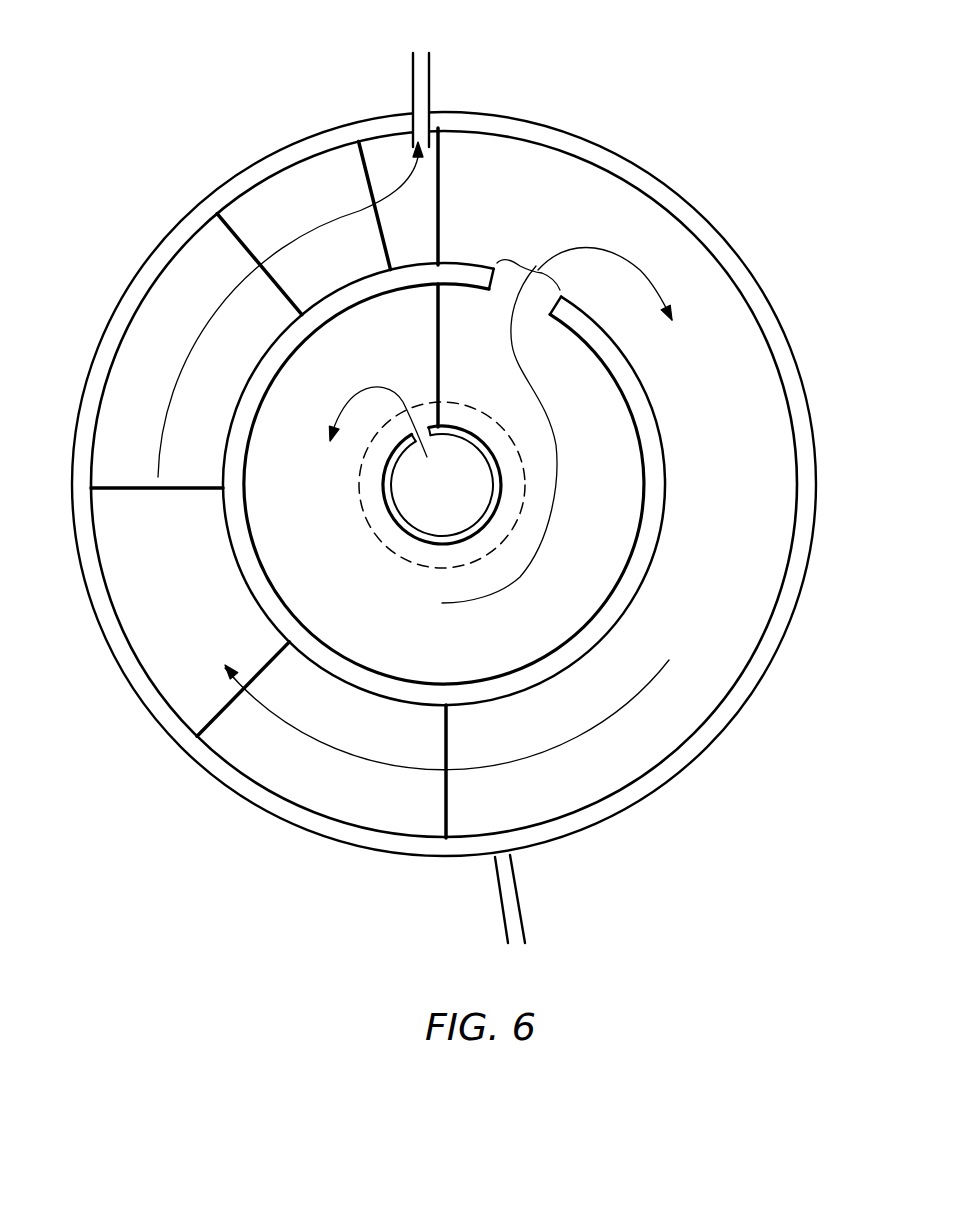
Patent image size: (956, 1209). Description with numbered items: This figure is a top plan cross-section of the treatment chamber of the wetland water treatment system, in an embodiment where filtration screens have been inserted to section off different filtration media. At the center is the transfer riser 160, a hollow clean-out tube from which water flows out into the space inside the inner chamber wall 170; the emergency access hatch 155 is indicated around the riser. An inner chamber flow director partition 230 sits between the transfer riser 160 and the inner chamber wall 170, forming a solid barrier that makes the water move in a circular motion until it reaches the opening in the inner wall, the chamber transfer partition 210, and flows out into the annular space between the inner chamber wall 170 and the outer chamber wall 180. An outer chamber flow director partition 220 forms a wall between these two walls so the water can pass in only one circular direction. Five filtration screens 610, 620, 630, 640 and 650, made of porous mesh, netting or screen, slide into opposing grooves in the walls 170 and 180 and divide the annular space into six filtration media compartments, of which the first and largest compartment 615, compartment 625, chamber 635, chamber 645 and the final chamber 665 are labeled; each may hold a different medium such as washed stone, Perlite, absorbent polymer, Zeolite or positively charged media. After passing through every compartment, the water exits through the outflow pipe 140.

The outflow pipe 140 is at (412, 67).
The outer chamber wall 180 is at (604, 153).
The filtration media compartment 645 is at (163, 300).
The filtration media compartment 625 is at (258, 763).
The filtration screen 630 is at (107, 487).
The filtration screen 620 is at (193, 728).
The filtration screen 610 is at (443, 826).
The filtration screen 640 is at (223, 227).
The filtration screen 650 is at (360, 140).
The outer chamber flow director partition 220 is at (440, 212).
The inner chamber flow director partition 230 is at (441, 357).
The filtration media compartment 665 is at (260, 198).
The filtration media compartment 635 is at (120, 552).
The filtration media compartment 615 is at (745, 631).
The inner chamber wall 170 is at (452, 268).
The chamber transfer partition 210 is at (536, 268).
The emergency access hatch 155 is at (522, 467).
The transfer riser 160 is at (385, 483).